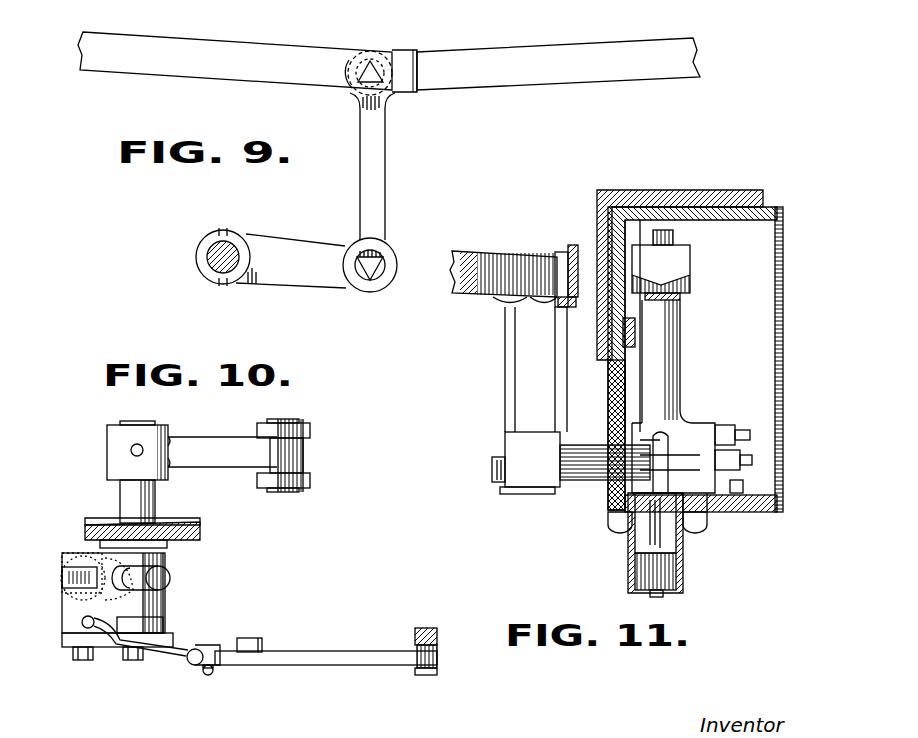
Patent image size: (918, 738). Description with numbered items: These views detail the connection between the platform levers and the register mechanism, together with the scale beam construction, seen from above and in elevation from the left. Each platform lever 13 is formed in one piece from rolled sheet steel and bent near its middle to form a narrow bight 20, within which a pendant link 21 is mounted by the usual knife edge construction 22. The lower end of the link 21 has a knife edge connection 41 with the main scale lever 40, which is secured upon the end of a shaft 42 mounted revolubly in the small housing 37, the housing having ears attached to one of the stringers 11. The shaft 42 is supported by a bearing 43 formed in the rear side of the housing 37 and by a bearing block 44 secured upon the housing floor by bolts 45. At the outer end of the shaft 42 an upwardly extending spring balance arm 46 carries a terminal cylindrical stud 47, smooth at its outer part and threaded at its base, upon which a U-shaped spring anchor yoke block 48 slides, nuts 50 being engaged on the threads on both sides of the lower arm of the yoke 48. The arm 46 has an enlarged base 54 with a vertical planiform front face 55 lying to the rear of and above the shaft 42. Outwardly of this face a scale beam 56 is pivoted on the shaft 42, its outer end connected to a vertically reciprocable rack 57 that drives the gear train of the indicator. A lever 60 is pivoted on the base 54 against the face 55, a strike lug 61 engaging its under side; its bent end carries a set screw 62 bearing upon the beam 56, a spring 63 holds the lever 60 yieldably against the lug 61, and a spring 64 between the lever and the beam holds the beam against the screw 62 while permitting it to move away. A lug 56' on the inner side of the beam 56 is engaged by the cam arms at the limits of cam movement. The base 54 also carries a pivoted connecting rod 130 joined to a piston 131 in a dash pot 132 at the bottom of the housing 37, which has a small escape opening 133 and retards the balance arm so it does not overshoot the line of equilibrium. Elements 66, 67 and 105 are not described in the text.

In FIG. 11, the stringer 11 is at (596, 204).
In FIG. 9, the platform lever 13 is at (264, 72).
In FIG. 11, the platform lever 13 is at (512, 250).
In FIG. 9, the bight 20 is at (412, 56).
In FIG. 11, the bight 20 is at (546, 305).
In FIG. 9, the pendant link 21 is at (386, 146).
In FIG. 10, the pendant link 21 is at (306, 436).
In FIG. 11, the pendant link 21 is at (556, 350).
In FIG. 9, the knife edge construction 22 is at (371, 60).
In FIG. 10, the housing 37 is at (200, 524).
In FIG. 11, the housing 37 is at (745, 512).
In FIG. 9, the main scale lever 40 is at (299, 276).
In FIG. 10, the main scale lever 40 is at (232, 462).
In FIG. 11, the main scale lever 40 is at (508, 444).
In FIG. 9, the knife edge connection 41 is at (386, 284).
In FIG. 10, the knife edge connection 41 is at (294, 492).
In FIG. 9, the shaft 42 is at (205, 252).
In FIG. 10, the shaft 42 is at (158, 500).
In FIG. 11, the shaft 42 is at (594, 478).
In FIG. 11, the bearing 43 is at (622, 418).
In FIG. 10, the bearing block 44 is at (165, 622).
In FIG. 11, the bearing block 44 is at (712, 512).
In FIG. 11, the bolt 45 is at (755, 512).
In FIG. 10, the spring balance arm 46 is at (162, 556).
In FIG. 11, the spring balance arm 46 is at (682, 330).
In FIG. 10, the cylindrical stud 47 is at (172, 578).
In FIG. 11, the cylindrical stud 47 is at (675, 238).
In FIG. 11, the spring anchor yoke block 48 is at (690, 270).
In FIG. 11, the nut 50 is at (682, 296).
In FIG. 10, the base 54 is at (68, 608).
In FIG. 11, the base 54 is at (696, 423).
In FIG. 10, the front face 55 is at (66, 646).
In FIG. 11, the front face 55 is at (728, 425).
In FIG. 10, the scale beam 56 is at (326, 639).
In FIG. 11, the scale beam 56 is at (678, 462).
In FIG. 10, the lug 56' is at (249, 632).
In FIG. 11, the lug 56' is at (765, 489).
In FIG. 10, the rack 57 is at (414, 634).
In FIG. 10, the lever 60 is at (176, 660).
In FIG. 11, the lever 60 is at (742, 452).
In FIG. 10, the strike lug 61 is at (212, 676).
In FIG. 11, the strike lug 61 is at (748, 434).
In FIG. 10, the set screw 62 is at (230, 664).
In FIG. 10, the spring 63 is at (115, 660).
In FIG. 10, the spring 64 is at (204, 676).
In FIG. 11, the spring 64 is at (752, 460).
In FIG. 11, the side wall 66 is at (786, 202).
In FIG. 10, the collar 67 is at (185, 542).
In FIG. 11, the collar 67 is at (610, 392).
In FIG. 11, the clamp 105 is at (626, 348).
In FIG. 10, the connecting rod 130 is at (64, 578).
In FIG. 11, the piston 131 is at (683, 552).
In FIG. 10, the dash pot 132 is at (62, 570).
In FIG. 11, the dash pot 132 is at (683, 578).
In FIG. 11, the escape opening 133 is at (664, 596).